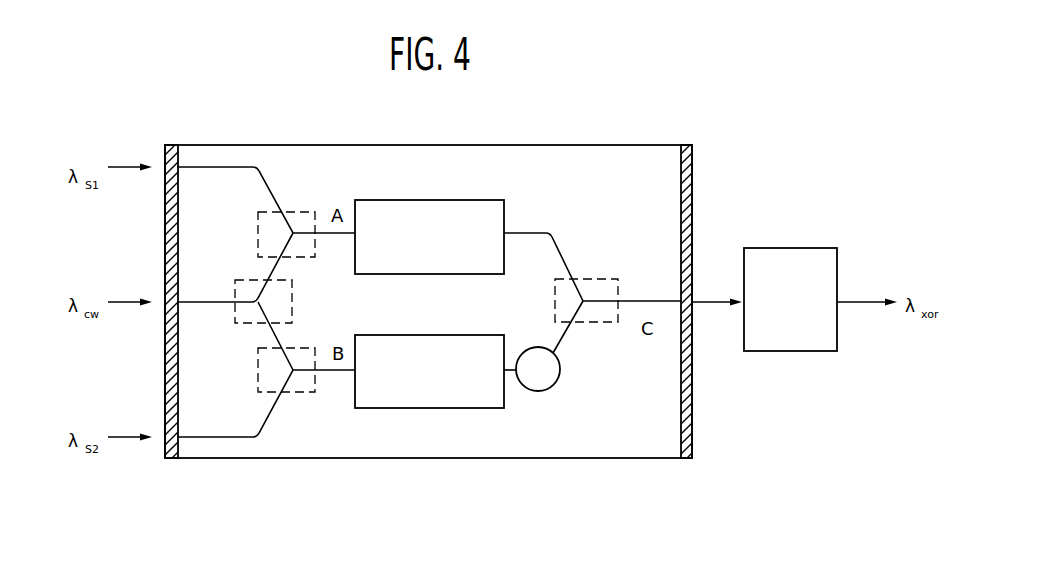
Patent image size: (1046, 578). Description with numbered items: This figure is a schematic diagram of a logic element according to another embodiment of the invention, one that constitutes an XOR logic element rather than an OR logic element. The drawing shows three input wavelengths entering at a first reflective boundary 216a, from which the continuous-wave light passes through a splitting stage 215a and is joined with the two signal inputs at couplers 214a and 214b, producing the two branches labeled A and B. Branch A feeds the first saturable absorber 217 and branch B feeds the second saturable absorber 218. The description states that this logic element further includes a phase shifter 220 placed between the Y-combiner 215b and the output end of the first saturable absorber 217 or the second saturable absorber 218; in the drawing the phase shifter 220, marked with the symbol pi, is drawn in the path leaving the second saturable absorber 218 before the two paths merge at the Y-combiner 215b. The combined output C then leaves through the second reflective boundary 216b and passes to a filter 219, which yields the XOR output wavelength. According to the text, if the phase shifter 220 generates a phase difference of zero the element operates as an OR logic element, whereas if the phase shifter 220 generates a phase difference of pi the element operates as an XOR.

The first coupler 214a is at (258, 236).
The second coupler 214b is at (258, 372).
The splitter 215a is at (292, 302).
The Y-combiner 215b is at (578, 279).
The first mirror 216a is at (177, 460).
The second mirror 216b is at (690, 460).
The first saturable absorber 217 is at (428, 200).
The second saturable absorber 218 is at (426, 335).
The filter 219 is at (771, 249).
The phase shifter 220 is at (556, 384).